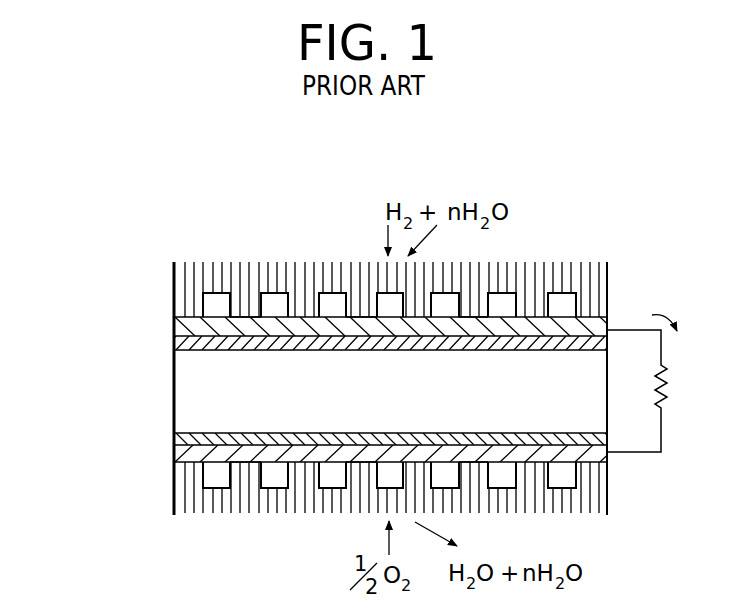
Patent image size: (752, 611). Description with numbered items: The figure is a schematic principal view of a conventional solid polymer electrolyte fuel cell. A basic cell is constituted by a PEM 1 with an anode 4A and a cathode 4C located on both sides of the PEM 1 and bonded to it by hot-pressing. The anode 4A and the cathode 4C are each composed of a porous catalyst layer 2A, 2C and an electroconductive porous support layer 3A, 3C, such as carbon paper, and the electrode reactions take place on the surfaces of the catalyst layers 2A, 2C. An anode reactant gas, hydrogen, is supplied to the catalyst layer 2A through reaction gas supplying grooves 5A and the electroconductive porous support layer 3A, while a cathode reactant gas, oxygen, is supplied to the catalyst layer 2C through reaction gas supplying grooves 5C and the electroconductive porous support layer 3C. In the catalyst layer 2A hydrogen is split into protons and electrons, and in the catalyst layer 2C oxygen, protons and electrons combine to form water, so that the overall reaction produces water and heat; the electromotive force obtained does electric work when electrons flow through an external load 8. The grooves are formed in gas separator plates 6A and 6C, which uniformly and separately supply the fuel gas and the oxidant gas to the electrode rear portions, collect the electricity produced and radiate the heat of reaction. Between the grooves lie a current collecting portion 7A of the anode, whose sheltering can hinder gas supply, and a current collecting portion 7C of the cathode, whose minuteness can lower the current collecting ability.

The PEM 1 is at (188, 392).
The porous catalyst layer 2A is at (174, 344).
The electroconductive porous support layer 3A is at (174, 326).
The anode 4A is at (97, 304).
The porous catalyst layer 2C is at (174, 440).
The electroconductive porous support layer 3C is at (174, 452).
The cathode 4C is at (97, 425).
The reaction gas supplying groove 5A is at (212, 296).
The gas separator plate 6A is at (275, 286).
The current collecting portion 7A is at (350, 314).
The reaction gas supplying groove 5C is at (215, 478).
The gas separator plate 6C is at (277, 498).
The current collecting portion 7C is at (352, 466).
The external load 8 is at (663, 383).